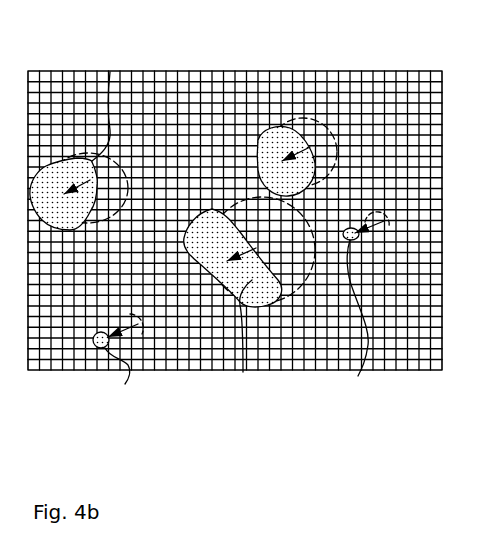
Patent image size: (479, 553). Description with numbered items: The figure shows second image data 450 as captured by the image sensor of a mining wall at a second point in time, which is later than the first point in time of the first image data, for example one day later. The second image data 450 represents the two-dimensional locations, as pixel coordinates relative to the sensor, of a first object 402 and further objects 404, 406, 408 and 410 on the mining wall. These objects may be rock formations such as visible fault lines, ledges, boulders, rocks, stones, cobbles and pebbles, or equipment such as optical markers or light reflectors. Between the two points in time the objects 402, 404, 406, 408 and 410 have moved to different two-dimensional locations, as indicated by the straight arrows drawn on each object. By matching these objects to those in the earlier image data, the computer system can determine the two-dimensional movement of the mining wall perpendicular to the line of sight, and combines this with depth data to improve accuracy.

The second image data 450 is at (114, 70).
The first object 402 is at (112, 70).
The object 404 is at (293, 145).
The object 406 is at (360, 311).
The object 408 is at (243, 372).
The object 410 is at (121, 363).